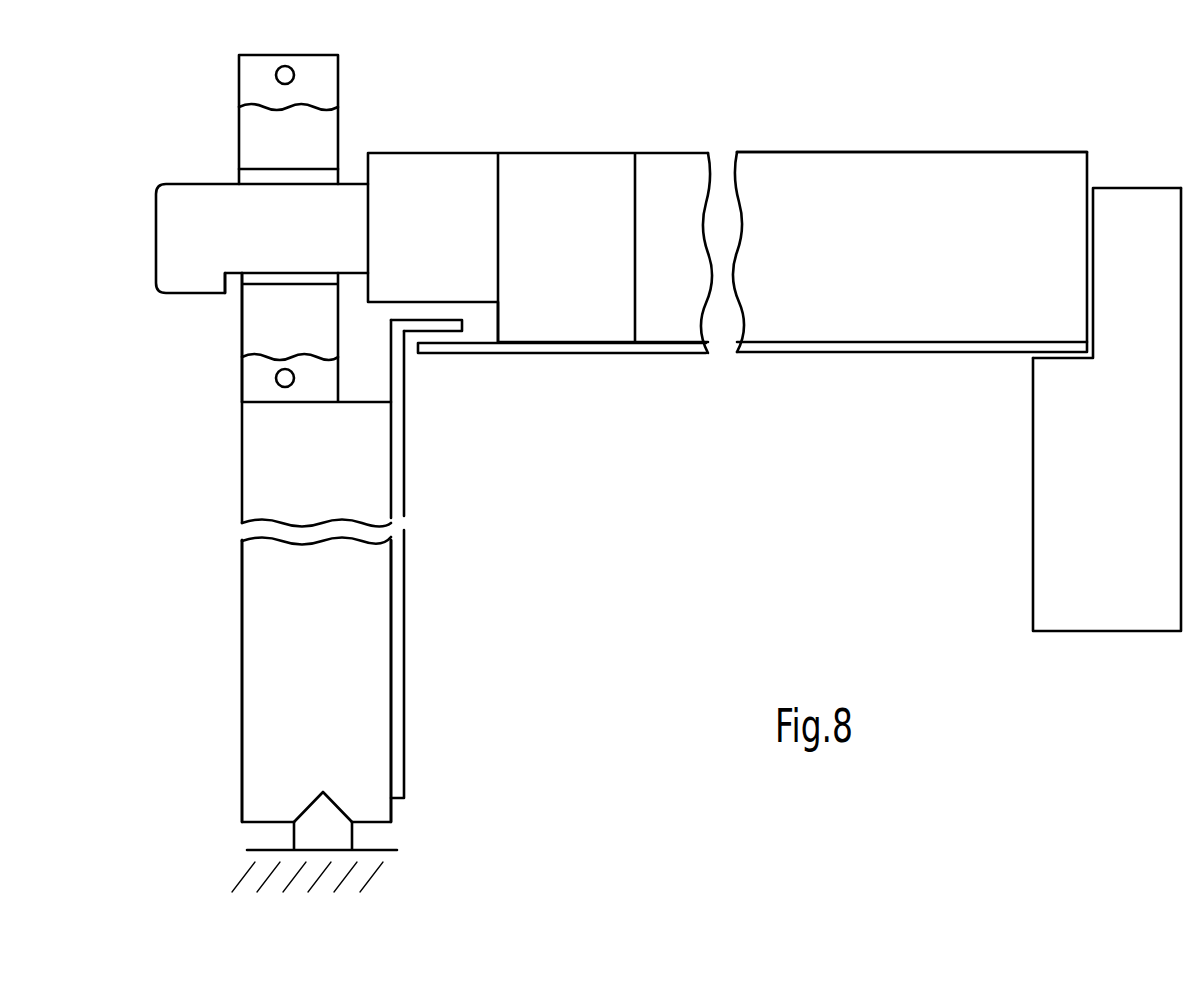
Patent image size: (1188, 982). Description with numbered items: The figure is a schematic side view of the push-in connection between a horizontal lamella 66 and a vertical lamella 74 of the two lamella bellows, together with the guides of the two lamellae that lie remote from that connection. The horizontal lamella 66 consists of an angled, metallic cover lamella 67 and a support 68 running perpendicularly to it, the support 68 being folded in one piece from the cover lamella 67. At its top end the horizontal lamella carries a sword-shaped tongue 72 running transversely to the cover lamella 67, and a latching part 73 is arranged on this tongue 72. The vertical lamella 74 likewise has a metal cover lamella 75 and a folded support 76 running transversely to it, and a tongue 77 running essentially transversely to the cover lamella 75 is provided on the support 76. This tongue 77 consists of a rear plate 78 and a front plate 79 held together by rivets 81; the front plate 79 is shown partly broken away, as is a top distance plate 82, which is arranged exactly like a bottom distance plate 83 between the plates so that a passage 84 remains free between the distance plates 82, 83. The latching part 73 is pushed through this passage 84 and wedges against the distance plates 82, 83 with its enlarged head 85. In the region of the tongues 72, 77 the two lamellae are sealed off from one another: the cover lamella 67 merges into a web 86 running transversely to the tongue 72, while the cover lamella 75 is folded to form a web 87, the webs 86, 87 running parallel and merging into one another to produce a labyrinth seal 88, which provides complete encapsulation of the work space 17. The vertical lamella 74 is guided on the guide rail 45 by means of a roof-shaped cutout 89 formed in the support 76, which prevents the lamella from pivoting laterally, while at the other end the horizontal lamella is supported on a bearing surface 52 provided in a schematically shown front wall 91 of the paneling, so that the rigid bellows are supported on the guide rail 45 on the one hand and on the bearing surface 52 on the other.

The work space 17 is at (800, 581).
The guide rail 45 is at (360, 837).
The bearing surface 52 is at (1073, 347).
The lamella 66 is at (912, 102).
The cover lamella 67 is at (805, 345).
The support 68 is at (845, 202).
The tongue 72 is at (410, 198).
The latching part 73 is at (185, 202).
The lamella 74 is at (390, 635).
The cover lamella 75 is at (398, 723).
The support 76 is at (348, 692).
The tongue 77 is at (198, 343).
The rear plate 78 is at (325, 83).
The front plate 79 is at (252, 377).
The rivets 81 is at (294, 70).
The top distance plate 82 is at (320, 132).
The bottom distance plate 83 is at (320, 327).
The passage 84 is at (257, 178).
The head 85 is at (190, 280).
The web 86 is at (475, 348).
The web 87 is at (440, 325).
The labyrinth seal 88 is at (490, 310).
The roof-shaped cutout 89 is at (342, 808).
The front wall 91 is at (1080, 533).